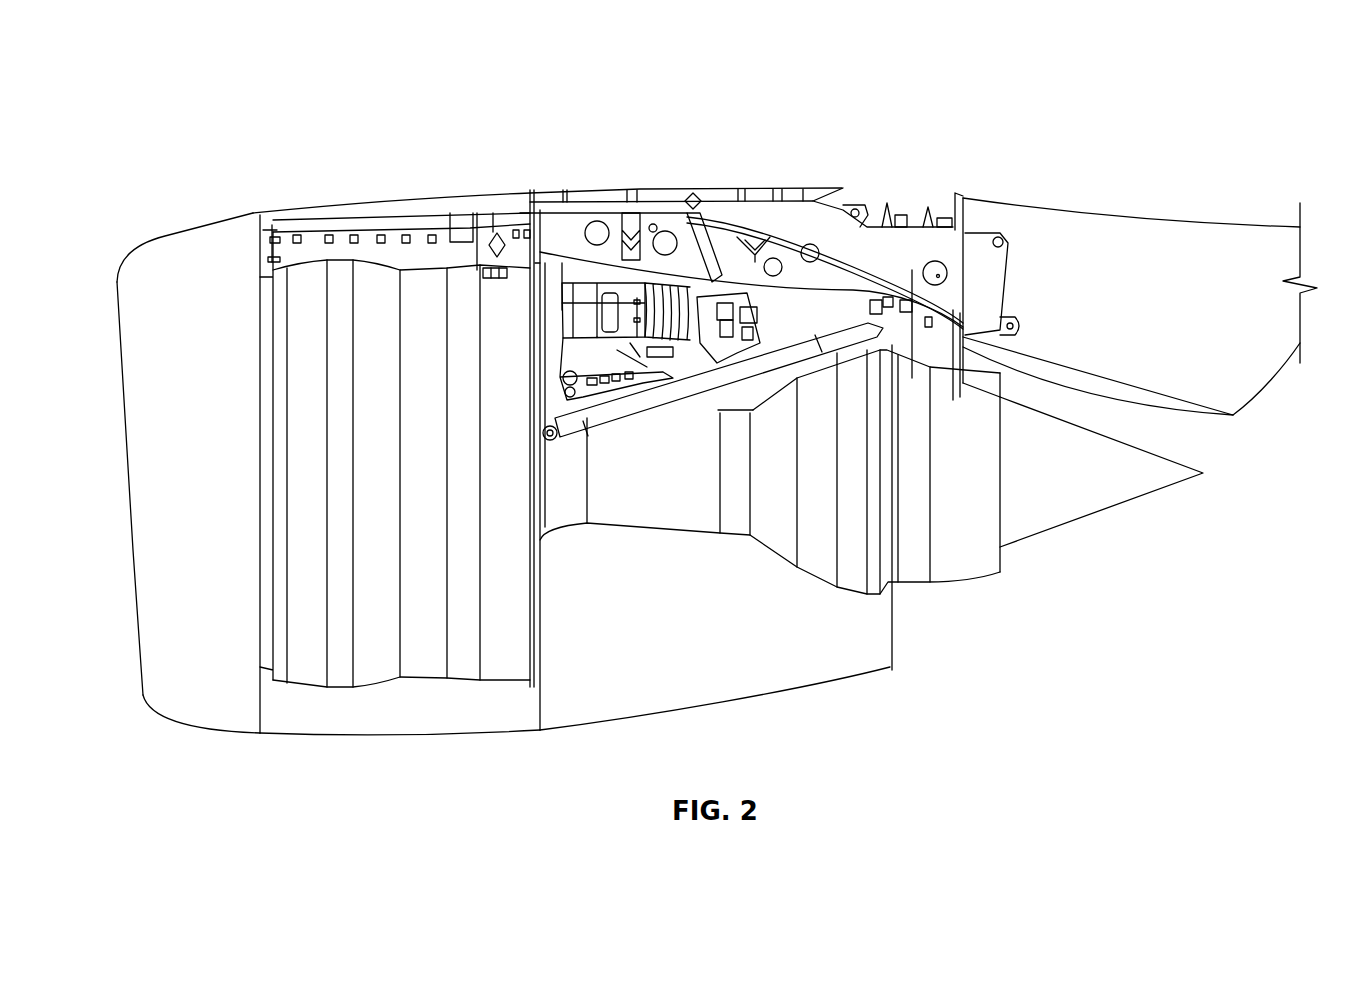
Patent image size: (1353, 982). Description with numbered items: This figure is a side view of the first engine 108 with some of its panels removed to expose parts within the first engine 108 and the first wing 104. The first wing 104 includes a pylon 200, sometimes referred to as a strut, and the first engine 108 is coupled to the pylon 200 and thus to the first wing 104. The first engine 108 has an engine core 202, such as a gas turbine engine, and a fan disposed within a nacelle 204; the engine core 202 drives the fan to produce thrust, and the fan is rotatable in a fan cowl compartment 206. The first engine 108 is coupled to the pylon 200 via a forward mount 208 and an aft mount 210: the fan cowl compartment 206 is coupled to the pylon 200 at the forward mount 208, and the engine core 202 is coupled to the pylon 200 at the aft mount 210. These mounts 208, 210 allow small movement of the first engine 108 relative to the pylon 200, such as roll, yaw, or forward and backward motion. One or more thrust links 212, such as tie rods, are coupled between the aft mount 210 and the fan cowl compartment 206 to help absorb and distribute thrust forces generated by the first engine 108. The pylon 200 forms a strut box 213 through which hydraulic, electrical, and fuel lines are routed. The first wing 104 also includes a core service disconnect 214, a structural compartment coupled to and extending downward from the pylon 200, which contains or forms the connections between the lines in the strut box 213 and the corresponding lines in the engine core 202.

The first engine 108 is at (183, 88).
The first wing 104 is at (1103, 237).
The pylon 200 is at (673, 222).
The engine core 202 is at (735, 522).
The nacelle 204 is at (157, 253).
The fan cowl compartment 206 is at (373, 288).
The forward mount 208 is at (497, 265).
The aft mount 210 is at (893, 280).
The thrust links 212 is at (693, 387).
The strut box 213 is at (634, 180).
The core service disconnect 214 is at (583, 283).